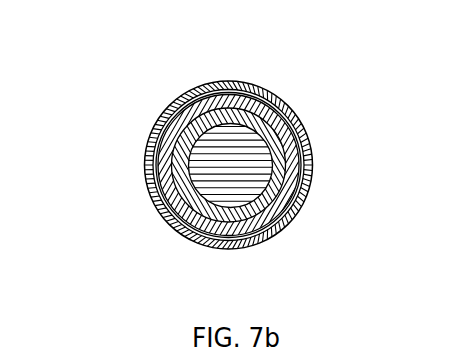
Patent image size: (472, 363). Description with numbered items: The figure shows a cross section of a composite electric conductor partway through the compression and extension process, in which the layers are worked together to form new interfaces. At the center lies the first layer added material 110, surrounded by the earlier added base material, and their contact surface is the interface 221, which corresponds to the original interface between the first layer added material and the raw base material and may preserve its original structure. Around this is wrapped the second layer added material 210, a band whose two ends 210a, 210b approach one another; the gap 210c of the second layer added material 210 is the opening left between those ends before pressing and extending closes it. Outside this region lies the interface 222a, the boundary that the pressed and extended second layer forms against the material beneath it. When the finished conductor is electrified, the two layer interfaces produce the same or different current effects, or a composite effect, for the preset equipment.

The first layer added material 110 is at (280, 206).
The second layer added material 210 is at (273, 237).
The end of second layer added material 210a is at (228, 88).
The end of second layer added material 210b is at (238, 82).
The gap of second layer added material 210c is at (230, 90).
The interface 221 is at (176, 152).
The outer insulating layer 222a is at (172, 122).